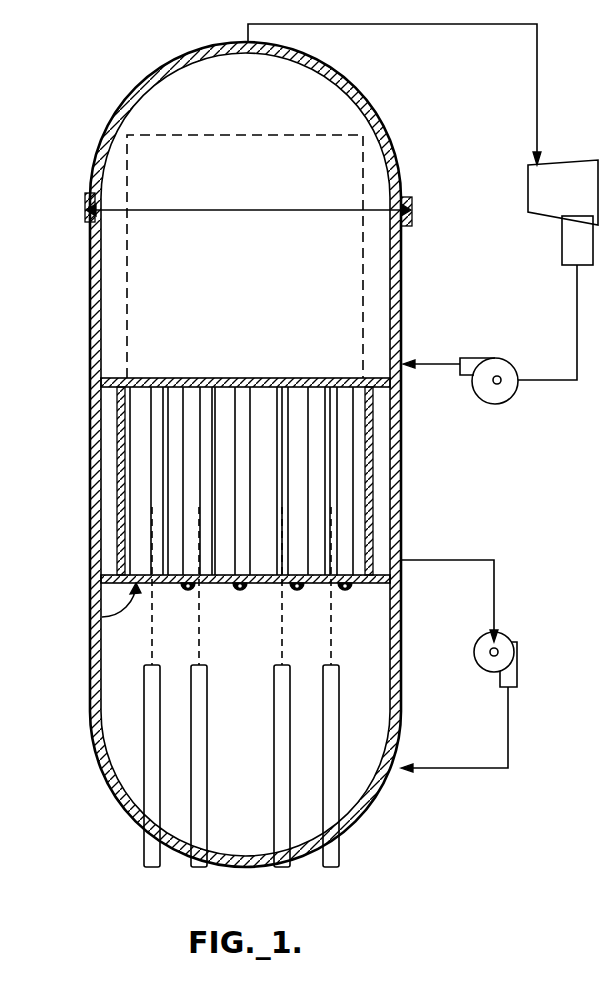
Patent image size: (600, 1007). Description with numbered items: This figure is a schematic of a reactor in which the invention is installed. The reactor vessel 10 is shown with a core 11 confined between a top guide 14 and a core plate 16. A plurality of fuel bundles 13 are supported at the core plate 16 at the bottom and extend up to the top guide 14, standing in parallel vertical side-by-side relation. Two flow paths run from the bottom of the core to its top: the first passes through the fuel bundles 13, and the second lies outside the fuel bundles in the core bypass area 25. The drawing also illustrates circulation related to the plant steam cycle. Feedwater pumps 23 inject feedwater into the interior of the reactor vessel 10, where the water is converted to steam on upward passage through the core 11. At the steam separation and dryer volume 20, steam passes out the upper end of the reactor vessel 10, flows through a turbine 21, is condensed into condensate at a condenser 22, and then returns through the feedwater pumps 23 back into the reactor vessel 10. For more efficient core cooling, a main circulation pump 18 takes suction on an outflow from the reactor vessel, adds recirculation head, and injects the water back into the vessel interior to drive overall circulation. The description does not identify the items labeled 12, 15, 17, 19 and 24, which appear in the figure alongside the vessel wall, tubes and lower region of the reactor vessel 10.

The reactor vessel 10 is at (92, 418).
The core 11 is at (118, 490).
The annular space 12 is at (117, 546).
The fuel bundles 13 is at (130, 456).
The top guide 14 is at (108, 376).
The tube 15 is at (332, 508).
The core plate 16 is at (103, 589).
The conduit 17 is at (102, 618).
The main circulation pump 18 is at (517, 653).
The lower plenum 19 is at (378, 636).
The steam separation and dryer volume 20 is at (126, 288).
The turbine 21 is at (528, 195).
The condenser 22 is at (562, 252).
The feedwater pumps 23 is at (503, 359).
The control rods 24 is at (150, 641).
The core bypass area 25 is at (338, 472).